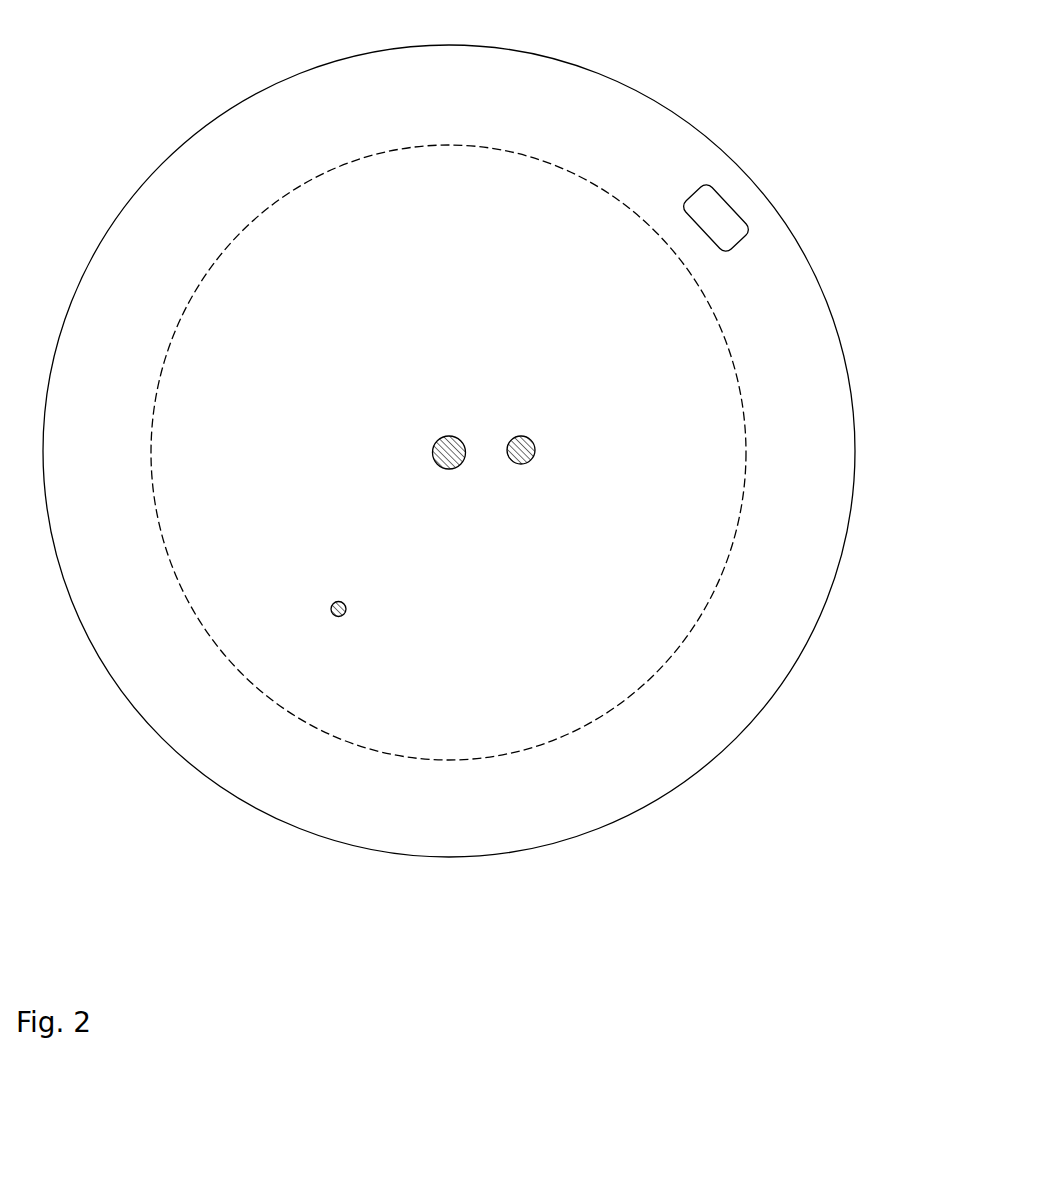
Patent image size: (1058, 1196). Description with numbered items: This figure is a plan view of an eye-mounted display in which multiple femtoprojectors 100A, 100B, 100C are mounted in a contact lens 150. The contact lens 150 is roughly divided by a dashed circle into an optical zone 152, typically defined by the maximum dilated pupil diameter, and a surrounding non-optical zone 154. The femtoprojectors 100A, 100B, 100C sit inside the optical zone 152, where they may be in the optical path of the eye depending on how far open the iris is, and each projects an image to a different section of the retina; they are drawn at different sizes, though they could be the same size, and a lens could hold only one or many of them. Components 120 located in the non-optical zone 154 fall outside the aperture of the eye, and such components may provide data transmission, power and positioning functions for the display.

The contact lens 150 is at (572, 65).
The non-optical zone 154 is at (495, 122).
The optical zone 152 is at (520, 205).
The components 120 is at (713, 208).
The femtoprojector 100A is at (437, 438).
The femtoprojector 100B is at (532, 438).
The femtoprojector 100C is at (342, 602).